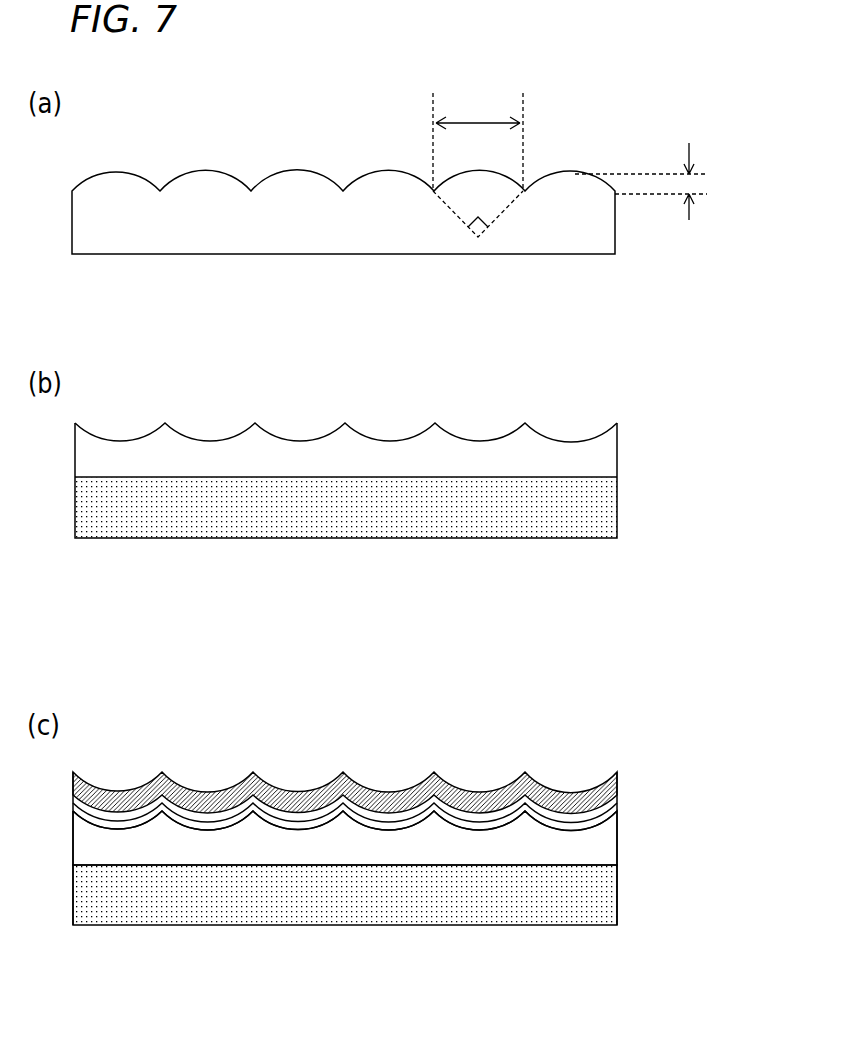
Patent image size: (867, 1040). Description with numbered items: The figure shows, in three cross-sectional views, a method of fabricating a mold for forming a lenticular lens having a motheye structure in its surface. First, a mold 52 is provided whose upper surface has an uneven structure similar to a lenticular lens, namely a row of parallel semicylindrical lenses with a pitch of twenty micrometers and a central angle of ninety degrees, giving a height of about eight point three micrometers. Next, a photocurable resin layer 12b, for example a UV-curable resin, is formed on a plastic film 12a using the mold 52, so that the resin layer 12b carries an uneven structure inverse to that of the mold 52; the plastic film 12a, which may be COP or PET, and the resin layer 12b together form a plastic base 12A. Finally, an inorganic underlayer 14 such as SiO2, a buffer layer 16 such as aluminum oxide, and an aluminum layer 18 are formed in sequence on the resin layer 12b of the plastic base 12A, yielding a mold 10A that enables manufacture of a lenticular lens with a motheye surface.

The mold 52 is at (603, 247).
The plastic base 12A is at (750, 435).
The photocurable resin layer 12b is at (600, 464).
The plastic film 12a is at (600, 508).
The mold 10A is at (641, 694).
The aluminum layer 18 is at (603, 784).
The buffer layer 16 is at (615, 802).
The inorganic underlayer 14 is at (617, 813).